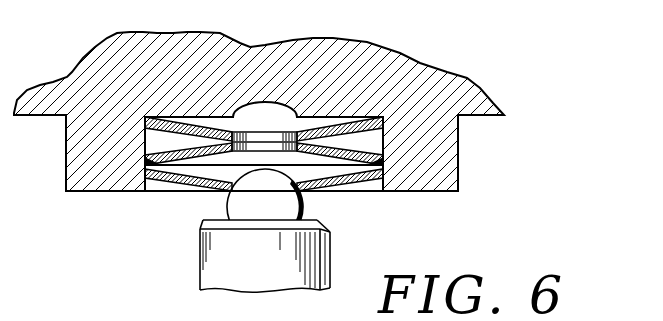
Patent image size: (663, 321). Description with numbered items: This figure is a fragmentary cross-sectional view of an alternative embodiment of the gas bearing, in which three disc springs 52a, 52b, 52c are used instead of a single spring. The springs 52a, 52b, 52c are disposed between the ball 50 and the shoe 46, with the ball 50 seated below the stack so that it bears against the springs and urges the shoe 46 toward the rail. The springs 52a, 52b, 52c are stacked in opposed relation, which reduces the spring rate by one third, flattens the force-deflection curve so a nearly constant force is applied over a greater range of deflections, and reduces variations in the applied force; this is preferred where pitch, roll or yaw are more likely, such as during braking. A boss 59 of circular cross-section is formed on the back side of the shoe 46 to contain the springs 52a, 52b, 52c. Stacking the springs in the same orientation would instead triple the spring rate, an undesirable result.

The shoe 46 is at (93, 57).
The ball 50 is at (227, 203).
The spring 52a is at (330, 191).
The spring 52b is at (362, 156).
The spring 52c is at (330, 128).
The boss 59 is at (423, 193).